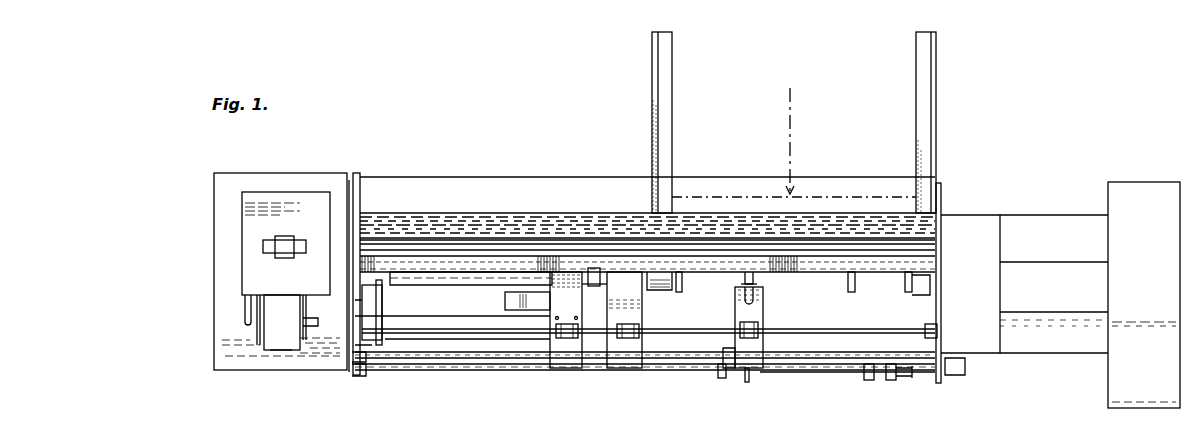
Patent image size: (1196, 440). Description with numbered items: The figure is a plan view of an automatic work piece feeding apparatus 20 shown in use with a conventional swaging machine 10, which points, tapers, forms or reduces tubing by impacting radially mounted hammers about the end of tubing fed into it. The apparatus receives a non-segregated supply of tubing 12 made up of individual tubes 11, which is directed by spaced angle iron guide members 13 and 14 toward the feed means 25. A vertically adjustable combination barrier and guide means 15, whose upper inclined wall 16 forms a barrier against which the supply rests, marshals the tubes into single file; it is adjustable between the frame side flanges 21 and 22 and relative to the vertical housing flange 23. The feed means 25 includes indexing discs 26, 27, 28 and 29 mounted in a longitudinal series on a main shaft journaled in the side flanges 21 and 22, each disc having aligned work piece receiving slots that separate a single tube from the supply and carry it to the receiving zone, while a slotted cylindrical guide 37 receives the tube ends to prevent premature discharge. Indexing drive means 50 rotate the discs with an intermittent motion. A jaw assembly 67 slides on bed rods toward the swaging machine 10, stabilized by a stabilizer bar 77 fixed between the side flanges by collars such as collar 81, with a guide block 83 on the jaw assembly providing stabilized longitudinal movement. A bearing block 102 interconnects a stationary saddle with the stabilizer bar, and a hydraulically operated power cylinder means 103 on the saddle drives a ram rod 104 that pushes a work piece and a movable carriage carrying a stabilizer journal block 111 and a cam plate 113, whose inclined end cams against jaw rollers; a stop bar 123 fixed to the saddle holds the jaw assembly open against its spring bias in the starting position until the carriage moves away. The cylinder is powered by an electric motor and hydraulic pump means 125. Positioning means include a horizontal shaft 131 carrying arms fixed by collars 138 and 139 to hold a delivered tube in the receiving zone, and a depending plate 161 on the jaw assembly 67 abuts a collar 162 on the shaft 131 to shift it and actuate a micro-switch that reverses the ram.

The swaging machine 10 is at (1060, 205).
The tubing 11 is at (860, 193).
The supply of tubing 12 is at (827, 183).
The angle iron guide member 13 is at (661, 94).
The angle iron guide member 14 is at (928, 99).
The combination barrier and guide means 15 is at (487, 238).
The upper inclined wall 16 is at (637, 232).
The automatic work piece feeding apparatus 20 is at (549, 146).
The side flange 21 is at (365, 192).
The side flange 22 is at (940, 206).
The vertical housing flange 23 is at (838, 265).
The feed means 25 is at (820, 290).
The indexing disc 26 is at (683, 285).
The indexing disc 27 is at (758, 285).
The indexing disc 28 is at (851, 294).
The indexing disc 29 is at (910, 292).
The cylindrical guide 37 is at (658, 280).
The indexing drive means 50 is at (388, 305).
The jaw assembly 67 is at (752, 360).
The stabilizer bar 77 is at (430, 330).
The collar 81 is at (937, 330).
The guide block 83 is at (762, 326).
The bearing block 102 is at (554, 328).
The hydraulically operated power cylinder means 103 is at (436, 277).
The ram rod 104 is at (594, 270).
The stabilizer journal block 111 is at (634, 343).
The cam plate 113 is at (512, 302).
The stop bar 123 is at (483, 325).
The electric motor and hydraulic pump means 125 is at (242, 266).
The shaft 131 is at (480, 370).
The collar 138 is at (718, 375).
The collar 139 is at (892, 381).
The depending plate 161 is at (748, 383).
The collar 162 is at (870, 381).